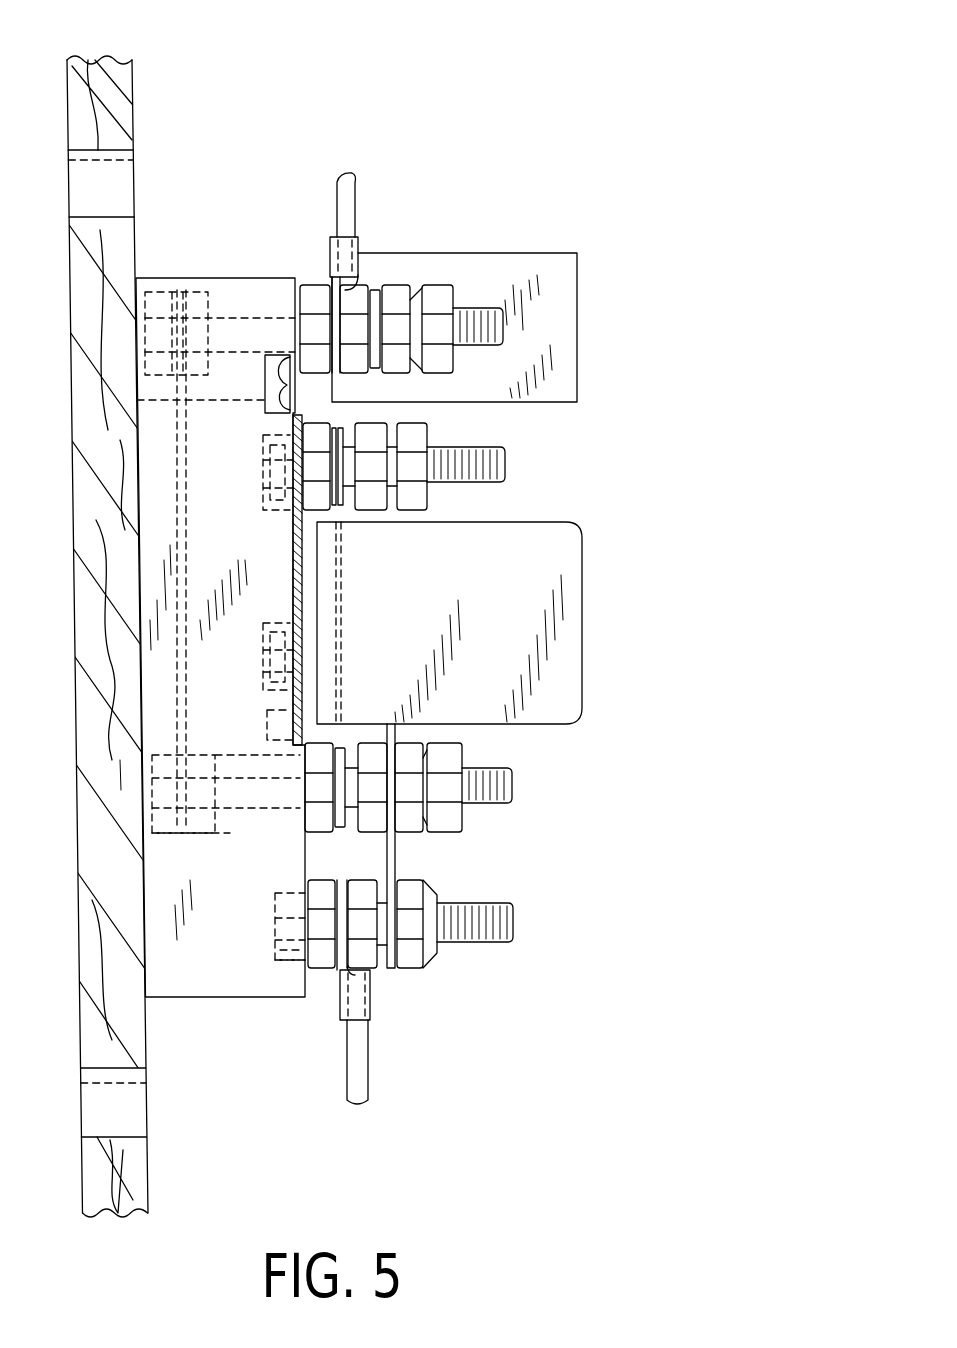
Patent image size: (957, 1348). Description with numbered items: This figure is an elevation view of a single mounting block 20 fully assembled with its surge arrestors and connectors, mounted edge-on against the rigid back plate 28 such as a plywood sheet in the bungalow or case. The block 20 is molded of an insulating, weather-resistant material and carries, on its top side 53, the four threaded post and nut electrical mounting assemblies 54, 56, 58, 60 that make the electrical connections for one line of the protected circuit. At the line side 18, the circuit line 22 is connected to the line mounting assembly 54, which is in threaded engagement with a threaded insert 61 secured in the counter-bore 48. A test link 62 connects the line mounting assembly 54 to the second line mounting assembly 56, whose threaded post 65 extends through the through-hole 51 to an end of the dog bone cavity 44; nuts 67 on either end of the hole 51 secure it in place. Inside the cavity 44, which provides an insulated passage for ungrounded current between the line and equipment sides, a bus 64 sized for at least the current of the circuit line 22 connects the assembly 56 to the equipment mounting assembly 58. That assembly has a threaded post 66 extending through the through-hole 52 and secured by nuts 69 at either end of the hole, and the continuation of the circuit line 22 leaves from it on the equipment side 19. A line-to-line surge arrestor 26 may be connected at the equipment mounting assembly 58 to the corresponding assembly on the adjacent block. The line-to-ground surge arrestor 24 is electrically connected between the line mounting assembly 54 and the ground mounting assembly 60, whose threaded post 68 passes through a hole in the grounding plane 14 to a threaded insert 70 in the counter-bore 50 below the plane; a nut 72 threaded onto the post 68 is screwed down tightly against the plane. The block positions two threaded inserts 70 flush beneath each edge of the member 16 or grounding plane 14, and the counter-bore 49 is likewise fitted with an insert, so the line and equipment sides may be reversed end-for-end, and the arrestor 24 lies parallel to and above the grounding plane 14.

The grounding plane 14 is at (307, 632).
The member 16 is at (346, 580).
The line side 18 is at (464, 970).
The equipment side 19 is at (456, 207).
The mounting block 20 is at (191, 622).
The circuit line 22 is at (343, 188).
The surge arrestor 24 is at (558, 700).
The line-to-line surge arrestor 26 is at (548, 252).
The back plate 28 is at (97, 1037).
The dog bone cavity 44 is at (157, 678).
The counter-bore 48 is at (273, 913).
The counter-bore 49 is at (263, 638).
The counter-bore 50 is at (262, 508).
The through-hole 51 is at (237, 803).
The through-hole 52 is at (255, 329).
The top side 53 is at (504, 637).
The line mounting assembly 54 is at (437, 972).
The second line mounting assembly 56 is at (466, 798).
The equipment mounting assembly 58 is at (480, 290).
The ground mounting assembly 60 is at (449, 495).
The threaded insert 61 is at (273, 958).
The test link 62 is at (396, 862).
The bus 64 is at (187, 445).
The threaded post 65 is at (507, 767).
The threaded post 66 is at (503, 318).
The nuts 67 is at (200, 837).
The threaded post 68 is at (507, 482).
The nuts 69 is at (213, 288).
The threaded insert 70 is at (267, 463).
The nut 72 is at (317, 500).